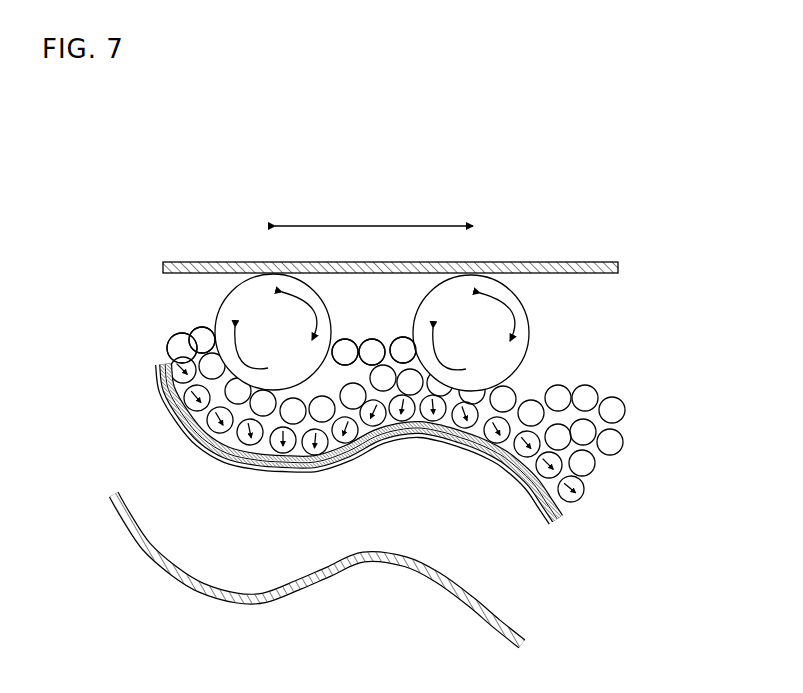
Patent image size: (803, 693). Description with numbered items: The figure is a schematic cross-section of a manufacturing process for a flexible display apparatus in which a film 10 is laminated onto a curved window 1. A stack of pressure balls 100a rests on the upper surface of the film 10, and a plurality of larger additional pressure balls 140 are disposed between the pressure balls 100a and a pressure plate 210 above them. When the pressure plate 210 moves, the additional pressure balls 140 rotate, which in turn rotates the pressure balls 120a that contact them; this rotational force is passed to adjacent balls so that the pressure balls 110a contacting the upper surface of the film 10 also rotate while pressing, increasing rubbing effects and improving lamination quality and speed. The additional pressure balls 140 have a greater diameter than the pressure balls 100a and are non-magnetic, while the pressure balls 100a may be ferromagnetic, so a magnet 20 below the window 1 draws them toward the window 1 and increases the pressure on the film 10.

The window 1 is at (553, 527).
The film 10 is at (562, 513).
The magnet 20 is at (528, 643).
The pressure balls 100a is at (590, 482).
The pressure balls contacting the film 110a is at (370, 452).
The pressure balls contacting the additional pressure balls 120a is at (213, 340).
The additional pressure balls 140 is at (247, 293).
The pressure plate 210 is at (618, 268).